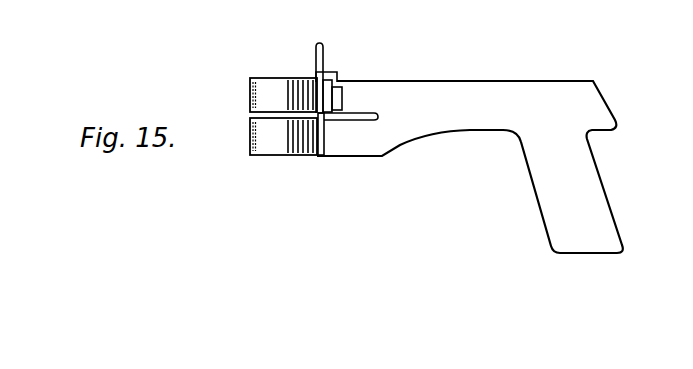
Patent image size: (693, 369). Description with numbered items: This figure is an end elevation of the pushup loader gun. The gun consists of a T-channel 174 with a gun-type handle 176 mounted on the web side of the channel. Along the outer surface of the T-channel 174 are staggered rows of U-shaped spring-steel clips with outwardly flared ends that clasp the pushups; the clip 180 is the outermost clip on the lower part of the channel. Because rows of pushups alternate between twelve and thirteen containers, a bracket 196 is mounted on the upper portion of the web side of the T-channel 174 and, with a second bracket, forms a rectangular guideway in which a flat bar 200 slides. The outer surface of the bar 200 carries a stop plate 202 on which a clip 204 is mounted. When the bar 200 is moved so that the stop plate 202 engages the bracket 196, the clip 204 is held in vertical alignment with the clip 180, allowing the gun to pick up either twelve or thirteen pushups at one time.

The T-channel 174 is at (363, 121).
The gun-type handle 176 is at (603, 190).
The U-shaped clip 180 is at (259, 156).
The bracket 196 is at (337, 72).
The flat bar 200 is at (327, 97).
The stop plate 202 is at (318, 85).
The clip 204 is at (249, 84).